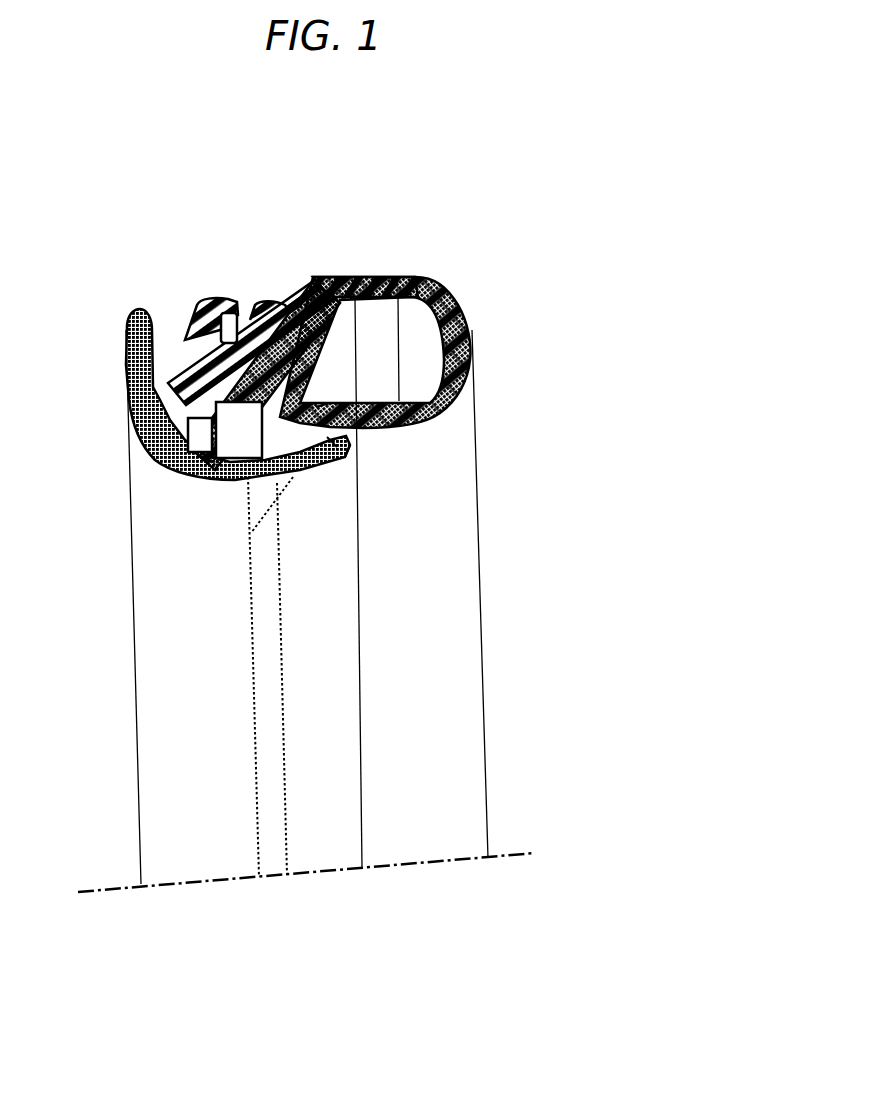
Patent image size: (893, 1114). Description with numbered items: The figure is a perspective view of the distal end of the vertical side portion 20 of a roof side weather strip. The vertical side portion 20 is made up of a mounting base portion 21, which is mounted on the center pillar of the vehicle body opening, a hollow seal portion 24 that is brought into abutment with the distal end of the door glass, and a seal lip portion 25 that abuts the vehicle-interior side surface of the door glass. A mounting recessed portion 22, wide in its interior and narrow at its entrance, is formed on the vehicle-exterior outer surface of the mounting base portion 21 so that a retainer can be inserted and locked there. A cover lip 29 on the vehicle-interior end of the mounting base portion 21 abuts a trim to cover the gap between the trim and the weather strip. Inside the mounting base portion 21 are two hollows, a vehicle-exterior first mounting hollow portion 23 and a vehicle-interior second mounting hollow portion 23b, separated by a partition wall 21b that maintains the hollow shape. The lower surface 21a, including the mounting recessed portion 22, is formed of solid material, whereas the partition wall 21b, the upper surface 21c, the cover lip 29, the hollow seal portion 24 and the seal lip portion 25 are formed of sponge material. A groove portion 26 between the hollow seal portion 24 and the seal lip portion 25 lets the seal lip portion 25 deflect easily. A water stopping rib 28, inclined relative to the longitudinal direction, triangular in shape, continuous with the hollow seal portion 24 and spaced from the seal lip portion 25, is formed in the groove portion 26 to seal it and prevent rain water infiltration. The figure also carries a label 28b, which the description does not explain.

The vertical side portion 20 is at (453, 663).
The mounting base portion 21 is at (258, 310).
The lower surface 21a is at (200, 297).
The partition wall 21b is at (200, 433).
The upper surface 21c is at (385, 302).
The mounting recessed portion 22 is at (237, 315).
The first mounting hollow portion 23 is at (293, 320).
The second mounting hollow portion 23b is at (207, 440).
The hollow seal portion 24 is at (472, 332).
The seal lip portion 25 is at (350, 455).
The groove portion 26 is at (333, 440).
The water stopping rib 28 is at (300, 437).
The seal lip inner wall 28b is at (316, 407).
The cover lip 29 is at (128, 330).